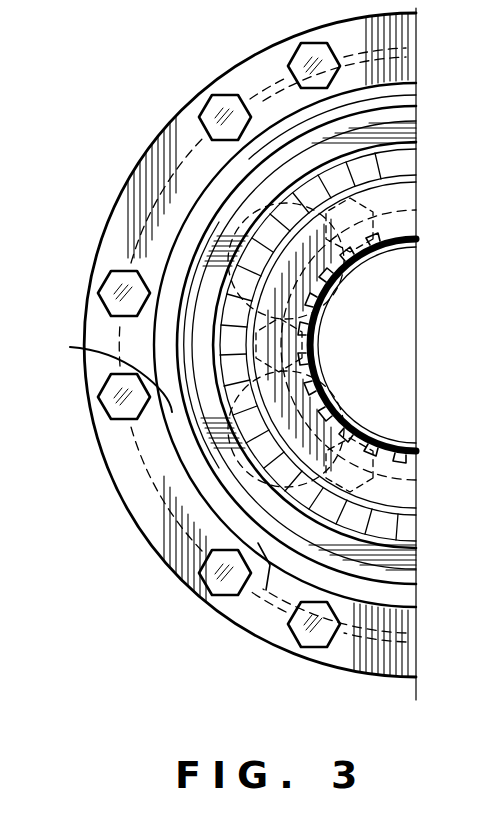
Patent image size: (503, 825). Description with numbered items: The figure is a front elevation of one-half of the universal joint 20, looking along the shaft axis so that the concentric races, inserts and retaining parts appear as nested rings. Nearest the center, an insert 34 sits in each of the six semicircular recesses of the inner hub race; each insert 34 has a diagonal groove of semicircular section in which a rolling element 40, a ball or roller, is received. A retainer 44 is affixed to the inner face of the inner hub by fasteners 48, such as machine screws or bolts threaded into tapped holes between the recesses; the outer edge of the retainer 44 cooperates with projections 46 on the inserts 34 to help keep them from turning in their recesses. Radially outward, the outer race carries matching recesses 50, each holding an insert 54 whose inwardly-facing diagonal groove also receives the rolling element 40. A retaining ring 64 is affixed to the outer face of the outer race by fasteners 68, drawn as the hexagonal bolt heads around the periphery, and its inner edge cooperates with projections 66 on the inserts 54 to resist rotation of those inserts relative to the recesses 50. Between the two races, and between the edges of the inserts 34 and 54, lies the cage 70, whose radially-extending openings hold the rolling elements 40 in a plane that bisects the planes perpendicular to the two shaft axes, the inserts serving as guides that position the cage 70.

The universal joint 20 is at (127, 136).
The insert 34 is at (306, 394).
The rolling elements 40 is at (180, 320).
The retainer 44 is at (326, 330).
The projections 46 is at (230, 418).
The fasteners 48 is at (408, 233).
The recesses 50 is at (153, 490).
The insert 54 is at (138, 465).
The retaining ring 64 is at (150, 543).
The projections 66 is at (229, 354).
The fasteners 68 is at (207, 600).
The cage 70 is at (206, 434).